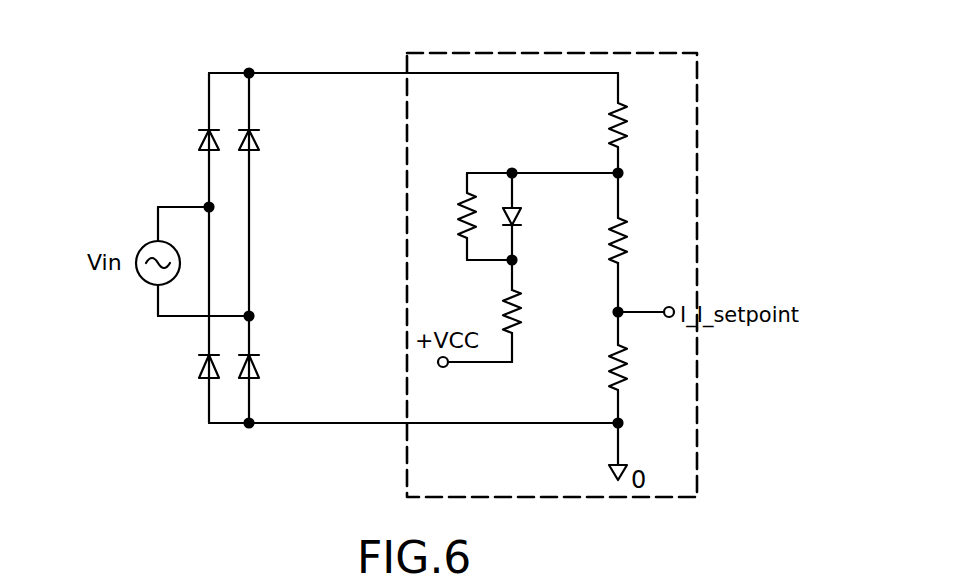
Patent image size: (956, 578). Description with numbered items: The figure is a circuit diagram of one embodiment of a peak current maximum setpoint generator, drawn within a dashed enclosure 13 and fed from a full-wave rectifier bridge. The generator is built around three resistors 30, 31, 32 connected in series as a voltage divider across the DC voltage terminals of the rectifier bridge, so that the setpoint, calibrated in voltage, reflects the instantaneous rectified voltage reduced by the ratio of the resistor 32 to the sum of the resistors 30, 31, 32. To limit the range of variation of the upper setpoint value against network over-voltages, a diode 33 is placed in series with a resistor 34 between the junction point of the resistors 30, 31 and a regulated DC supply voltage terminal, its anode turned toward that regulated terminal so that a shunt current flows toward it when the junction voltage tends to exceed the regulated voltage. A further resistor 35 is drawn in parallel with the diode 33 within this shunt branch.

The control circuit 13 is at (700, 173).
The resistor 30 is at (627, 121).
The resistor 31 is at (627, 233).
The resistor 32 is at (630, 372).
The diode 33 is at (526, 220).
The resistor 34 is at (527, 307).
The resistor 35 is at (453, 220).